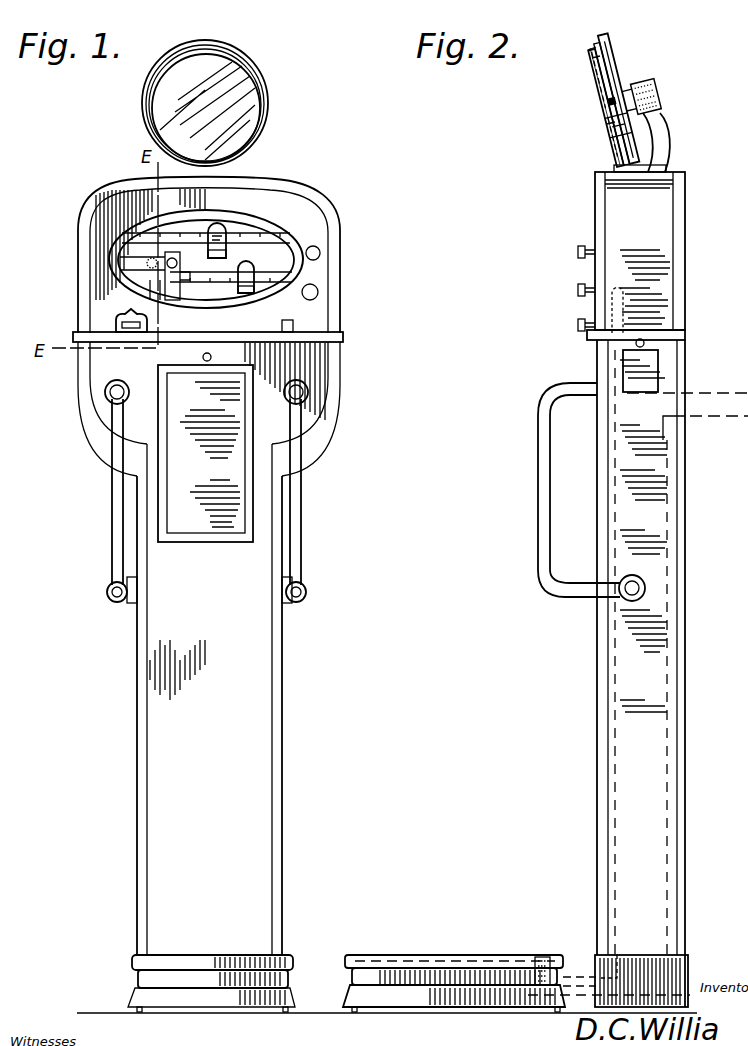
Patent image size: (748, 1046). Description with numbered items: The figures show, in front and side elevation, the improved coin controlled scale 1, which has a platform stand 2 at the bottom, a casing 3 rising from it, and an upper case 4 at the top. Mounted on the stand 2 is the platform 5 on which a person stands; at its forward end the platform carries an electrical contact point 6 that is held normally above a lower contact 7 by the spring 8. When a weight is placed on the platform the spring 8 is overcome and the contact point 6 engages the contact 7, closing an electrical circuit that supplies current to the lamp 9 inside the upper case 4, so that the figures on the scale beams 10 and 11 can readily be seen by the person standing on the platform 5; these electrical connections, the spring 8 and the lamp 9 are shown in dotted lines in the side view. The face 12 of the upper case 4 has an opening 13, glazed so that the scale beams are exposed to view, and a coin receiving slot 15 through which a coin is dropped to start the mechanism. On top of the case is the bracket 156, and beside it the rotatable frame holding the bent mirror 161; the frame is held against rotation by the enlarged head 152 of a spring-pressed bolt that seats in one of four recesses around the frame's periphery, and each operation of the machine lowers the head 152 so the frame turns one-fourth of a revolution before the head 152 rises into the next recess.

In FIG. 1, the coin controlled scale 1 is at (283, 660).
In FIG. 2, the coin controlled scale 1 is at (593, 648).
In FIG. 1, the platform stand 2 is at (153, 978).
In FIG. 2, the platform stand 2 is at (412, 987).
In FIG. 1, the casing 3 is at (255, 745).
In FIG. 2, the casing 3 is at (650, 683).
In FIG. 1, the upper case 4 is at (332, 315).
In FIG. 2, the upper case 4 is at (660, 267).
In FIG. 1, the platform 5 is at (270, 962).
In FIG. 2, the platform 5 is at (397, 958).
In FIG. 2, the electrical contact point 6 is at (528, 980).
In FIG. 2, the contact 7 is at (527, 993).
In FIG. 2, the spring 8 is at (560, 953).
In FIG. 2, the lamp 9 is at (590, 307).
In FIG. 1, the scale beam 10 is at (262, 238).
In FIG. 1, the scale beam 11 is at (277, 277).
In FIG. 1, the face 12 is at (206, 277).
In FIG. 1, the opening 13 is at (245, 220).
In FIG. 1, the coin receiving slot 15 is at (118, 313).
In FIG. 2, the enlarged head 152 is at (620, 168).
In FIG. 2, the bracket 156 is at (652, 130).
In FIG. 1, the bent mirror 161 is at (235, 97).
In FIG. 2, the bent mirror 161 is at (590, 82).